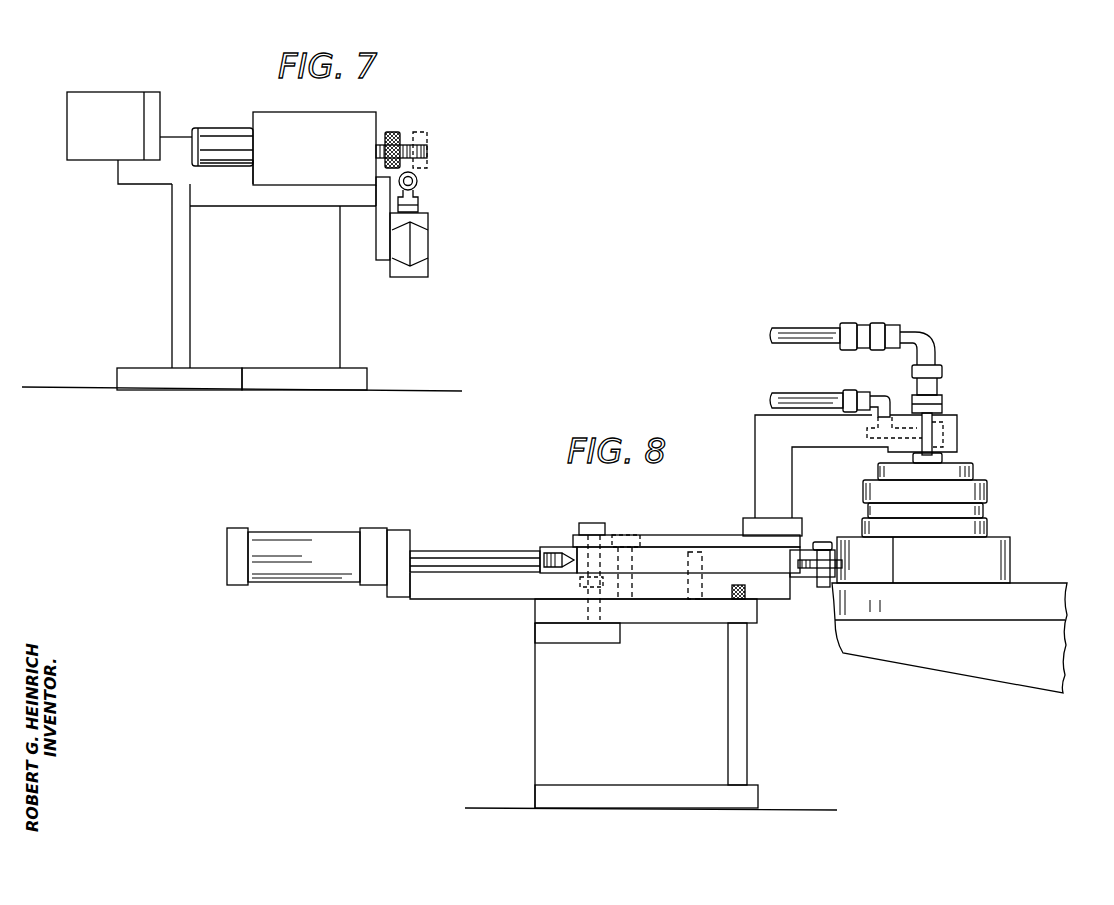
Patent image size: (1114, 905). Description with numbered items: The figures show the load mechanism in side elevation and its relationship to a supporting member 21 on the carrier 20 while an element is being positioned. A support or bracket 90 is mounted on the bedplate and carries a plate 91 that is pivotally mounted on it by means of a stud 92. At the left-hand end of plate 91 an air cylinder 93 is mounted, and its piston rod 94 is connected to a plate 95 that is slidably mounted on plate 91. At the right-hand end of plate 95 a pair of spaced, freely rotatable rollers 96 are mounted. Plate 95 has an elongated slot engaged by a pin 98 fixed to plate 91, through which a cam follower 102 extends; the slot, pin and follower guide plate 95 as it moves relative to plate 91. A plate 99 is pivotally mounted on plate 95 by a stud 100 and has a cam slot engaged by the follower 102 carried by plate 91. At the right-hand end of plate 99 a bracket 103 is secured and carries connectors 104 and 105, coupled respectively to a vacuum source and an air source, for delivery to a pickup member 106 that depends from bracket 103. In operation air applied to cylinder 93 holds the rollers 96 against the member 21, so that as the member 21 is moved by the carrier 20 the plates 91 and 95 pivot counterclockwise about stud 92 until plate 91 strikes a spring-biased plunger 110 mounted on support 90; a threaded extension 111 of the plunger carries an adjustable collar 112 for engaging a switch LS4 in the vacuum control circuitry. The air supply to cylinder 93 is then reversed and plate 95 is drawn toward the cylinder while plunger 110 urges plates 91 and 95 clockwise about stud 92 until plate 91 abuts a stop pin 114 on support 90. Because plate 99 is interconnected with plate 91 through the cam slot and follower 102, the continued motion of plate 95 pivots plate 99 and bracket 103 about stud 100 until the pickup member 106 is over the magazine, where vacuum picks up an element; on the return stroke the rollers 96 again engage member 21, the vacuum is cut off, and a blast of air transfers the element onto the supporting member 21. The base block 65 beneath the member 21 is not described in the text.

In FIG. 7, the spring-biased plunger 110 is at (217, 128).
In FIG. 7, the plate 91 is at (143, 174).
In FIG. 7, the support or bracket 90 is at (176, 278).
In FIG. 8, the support or bracket 90 is at (548, 687).
In FIG. 7, the adjustable collar 112 is at (392, 132).
In FIG. 7, the threaded extension 111 is at (428, 153).
In FIG. 7, the switch LS4 is at (430, 223).
In FIG. 8, the air cylinder 93 is at (307, 532).
In FIG. 8, the piston rod 94 is at (453, 551).
In FIG. 8, the plate 95 is at (547, 547).
In FIG. 8, the plate 99 is at (672, 538).
In FIG. 8, the stud 100 is at (592, 523).
In FIG. 8, the cam follower 102 is at (635, 537).
In FIG. 8, the pin 98 is at (695, 553).
In FIG. 8, the stud 92 is at (583, 605).
In FIG. 8, the stop pin 114 is at (752, 602).
In FIG. 8, the rollers 96 is at (812, 572).
In FIG. 8, the bracket 103 is at (762, 429).
In FIG. 8, the connector 104 is at (867, 392).
In FIG. 8, the connector 105 is at (872, 323).
In FIG. 8, the pickup member 106 is at (942, 463).
In FIG. 8, the supporting member 21 is at (996, 515).
In FIG. 8, the base block 65 is at (1010, 553).
In FIG. 8, the carrier 20 is at (878, 671).